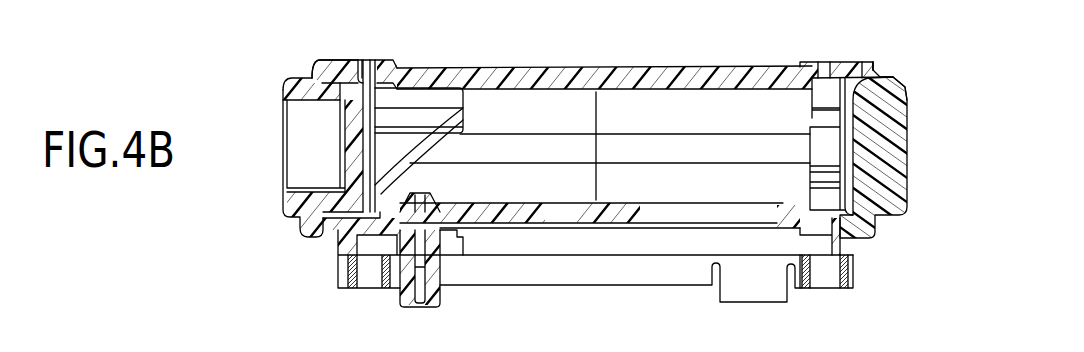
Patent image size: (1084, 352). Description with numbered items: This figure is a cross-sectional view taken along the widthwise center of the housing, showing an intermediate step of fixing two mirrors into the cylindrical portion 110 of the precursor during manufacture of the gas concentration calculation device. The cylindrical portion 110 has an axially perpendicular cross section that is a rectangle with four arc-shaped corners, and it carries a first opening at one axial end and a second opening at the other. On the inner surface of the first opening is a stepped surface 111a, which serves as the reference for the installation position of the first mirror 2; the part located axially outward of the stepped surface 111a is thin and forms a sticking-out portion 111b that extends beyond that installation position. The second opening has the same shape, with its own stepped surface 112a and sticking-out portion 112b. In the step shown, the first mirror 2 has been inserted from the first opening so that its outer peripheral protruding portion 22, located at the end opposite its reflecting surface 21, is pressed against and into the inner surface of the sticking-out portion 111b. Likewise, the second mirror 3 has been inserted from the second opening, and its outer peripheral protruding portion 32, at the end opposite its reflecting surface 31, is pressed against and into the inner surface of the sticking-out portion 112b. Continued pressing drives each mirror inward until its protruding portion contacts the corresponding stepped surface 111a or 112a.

The first mirror 2 is at (880, 153).
The second mirror 3 is at (302, 142).
The reflecting surface 21 is at (847, 148).
The outer peripheral protruding portion 22 is at (880, 72).
The reflecting surface 31 is at (442, 133).
The outer peripheral protruding portion 32 is at (310, 82).
The cylindrical portion 110 is at (588, 82).
The stepped surface 111a is at (822, 62).
The sticking-out portion 111b is at (872, 62).
The stepped surface 112a is at (365, 62).
The sticking-out portion 112b is at (320, 62).